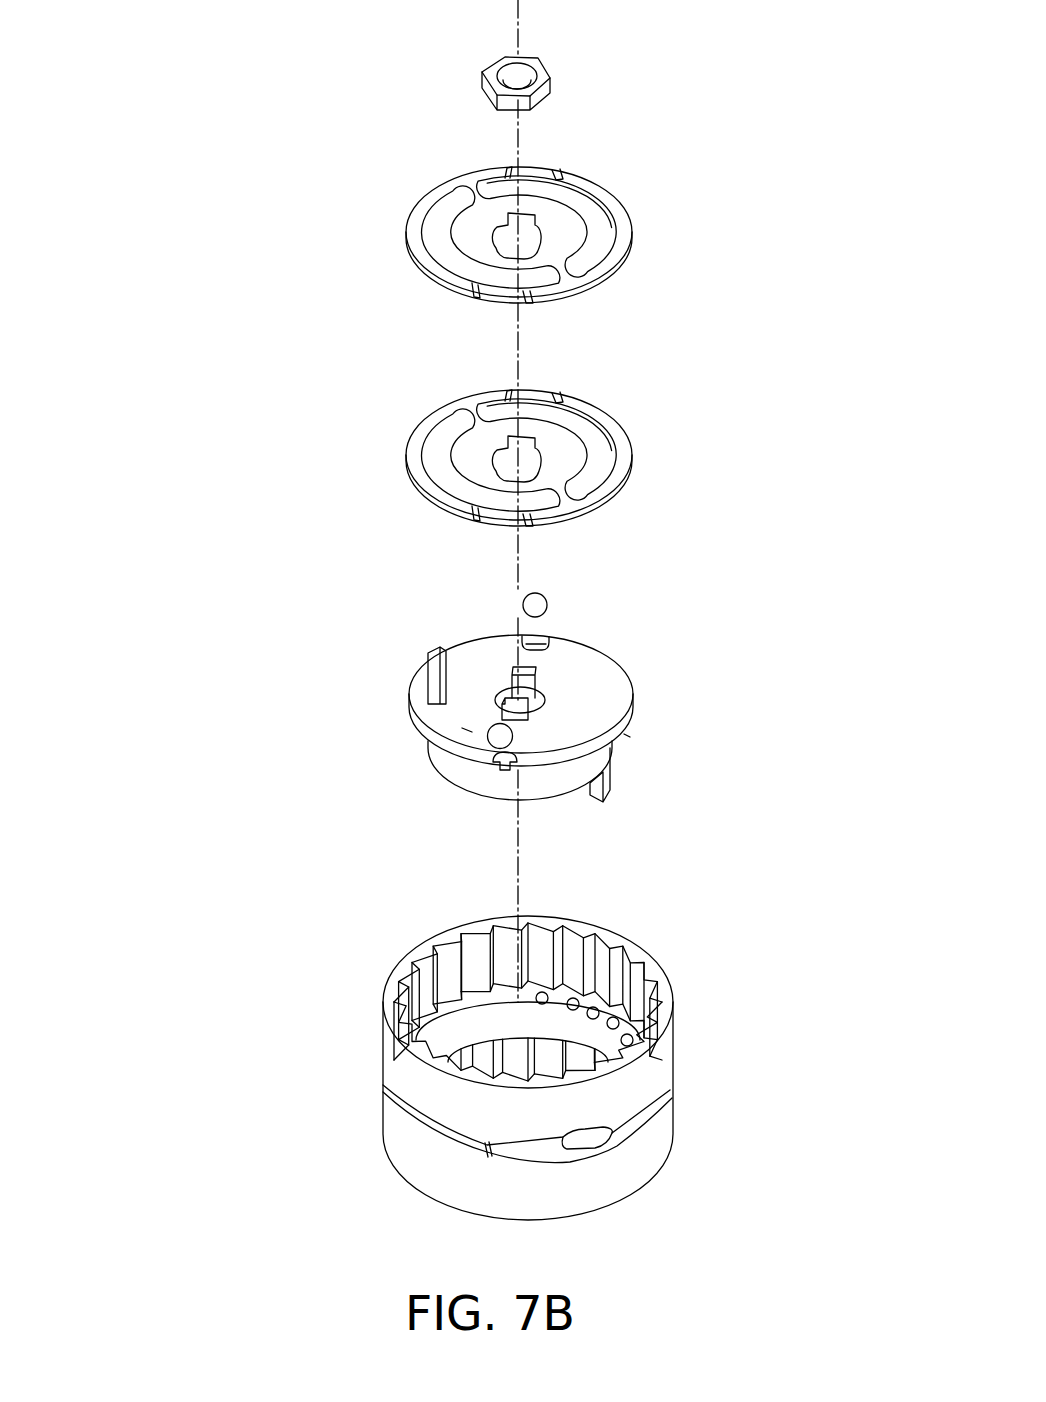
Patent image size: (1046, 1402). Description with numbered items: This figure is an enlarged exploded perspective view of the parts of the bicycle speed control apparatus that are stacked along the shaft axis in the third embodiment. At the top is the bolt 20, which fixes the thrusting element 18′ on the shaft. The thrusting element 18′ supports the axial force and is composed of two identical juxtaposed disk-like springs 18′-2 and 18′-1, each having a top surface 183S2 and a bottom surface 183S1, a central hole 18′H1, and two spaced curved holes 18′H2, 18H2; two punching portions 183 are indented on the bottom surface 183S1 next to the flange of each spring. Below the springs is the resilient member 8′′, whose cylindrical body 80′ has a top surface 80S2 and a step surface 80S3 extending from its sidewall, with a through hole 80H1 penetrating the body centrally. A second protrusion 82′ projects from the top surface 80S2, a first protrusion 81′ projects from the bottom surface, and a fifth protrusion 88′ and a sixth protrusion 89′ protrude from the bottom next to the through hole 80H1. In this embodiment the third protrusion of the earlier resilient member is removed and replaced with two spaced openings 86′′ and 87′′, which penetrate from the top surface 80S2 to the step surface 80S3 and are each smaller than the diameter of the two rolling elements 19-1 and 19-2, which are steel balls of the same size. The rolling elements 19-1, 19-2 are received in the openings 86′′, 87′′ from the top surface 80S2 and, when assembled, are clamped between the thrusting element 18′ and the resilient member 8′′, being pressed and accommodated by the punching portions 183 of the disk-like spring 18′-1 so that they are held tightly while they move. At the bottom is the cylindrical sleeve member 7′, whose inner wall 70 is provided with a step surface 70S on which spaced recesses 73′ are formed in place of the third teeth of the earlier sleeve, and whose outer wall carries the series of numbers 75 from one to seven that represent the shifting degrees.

The bolt 20 is at (553, 82).
The thrusting element 18′ is at (207, 353).
The disk-like spring 18′-2 is at (403, 236).
The disk-like spring 18′-1 is at (418, 418).
The punching portion 183 is at (537, 167).
The top surface 183S2 is at (546, 171).
The bottom surface 183S1 is at (540, 388).
The curved hole 18′H2 is at (600, 210).
The central hole 18′H1 is at (545, 240).
The curved hole 18H2 is at (543, 287).
The resilient member 8′′ is at (407, 703).
The cylindrical body 80′ is at (483, 775).
The second protrusion 82′ is at (430, 662).
The opening 87′′ is at (527, 635).
The through hole 80H1 is at (500, 697).
The sixth protrusion 89′ is at (540, 670).
The fifth protrusion 88′ is at (527, 713).
The rolling element 19-2 is at (550, 602).
The rolling element 19-1 is at (513, 743).
The opening 86′′ is at (495, 770).
The first protrusion 81′ is at (610, 780).
The top surface 80S2 is at (467, 730).
The step surface 80S3 is at (627, 735).
The cylindrical sleeve member 7′ is at (380, 1087).
The step surface 70S is at (487, 1000).
The inner wall 70 is at (477, 1033).
The recess 73′ is at (580, 1005).
The series of numbers 75 is at (617, 1170).